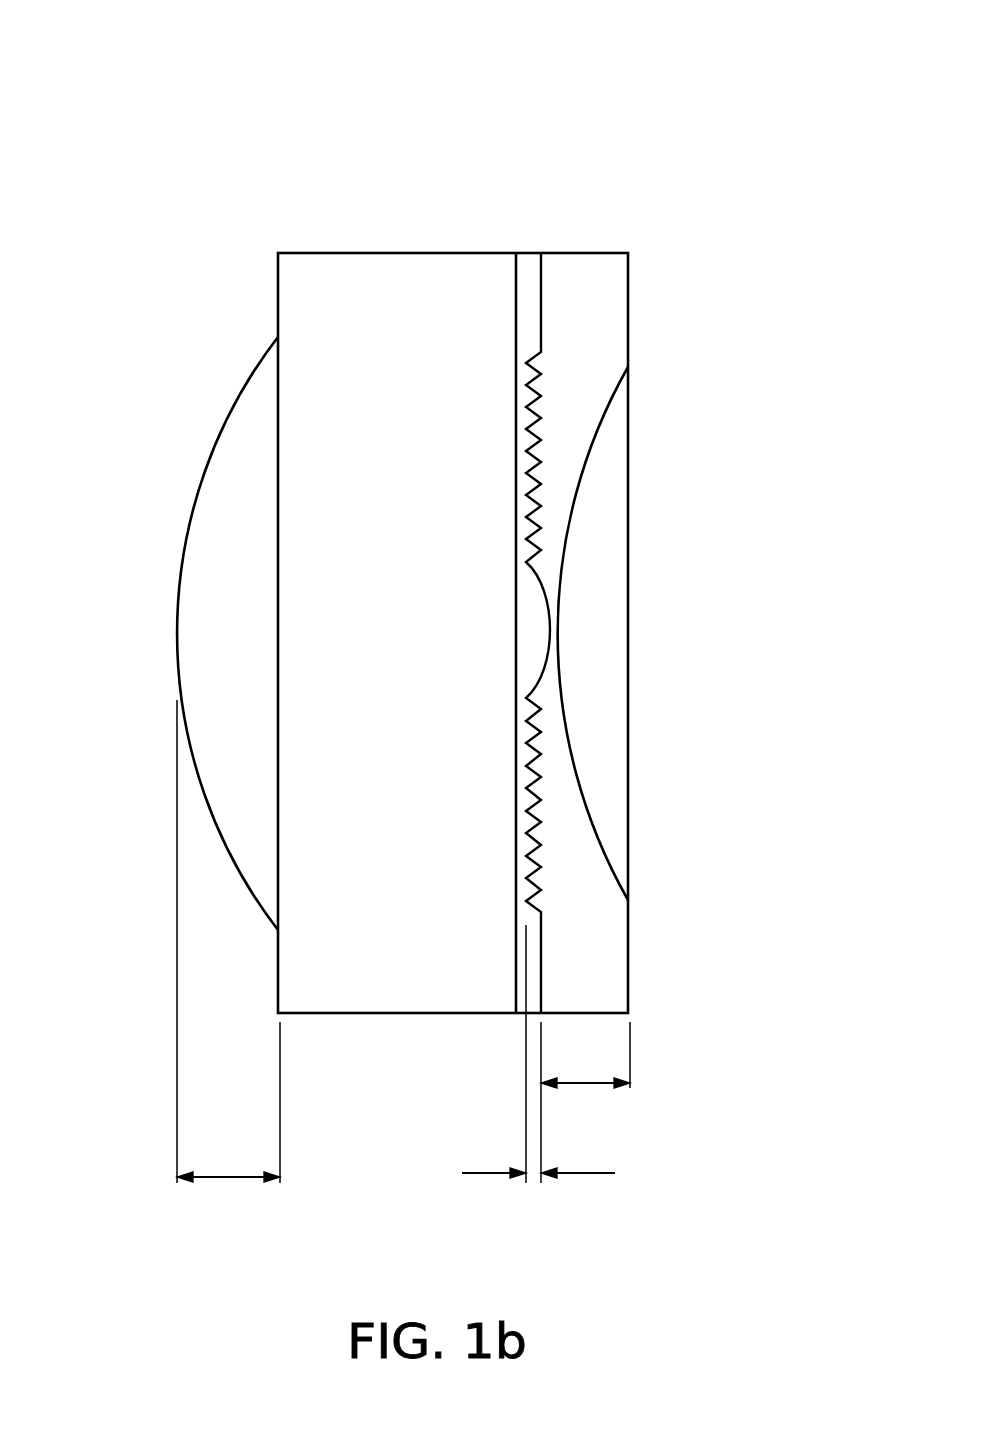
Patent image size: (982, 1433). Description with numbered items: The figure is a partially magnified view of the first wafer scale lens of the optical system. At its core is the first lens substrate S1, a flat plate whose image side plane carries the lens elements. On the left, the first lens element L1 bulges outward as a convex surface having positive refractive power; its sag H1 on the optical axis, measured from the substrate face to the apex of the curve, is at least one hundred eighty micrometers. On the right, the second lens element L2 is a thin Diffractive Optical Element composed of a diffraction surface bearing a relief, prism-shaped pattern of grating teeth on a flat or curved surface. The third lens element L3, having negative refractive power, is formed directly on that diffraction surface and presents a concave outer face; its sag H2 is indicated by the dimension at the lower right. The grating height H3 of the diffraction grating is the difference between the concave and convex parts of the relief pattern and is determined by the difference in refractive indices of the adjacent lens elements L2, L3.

The first lens substrate S1 is at (365, 292).
The first lens element L1 is at (240, 438).
The second lens element L2 is at (527, 263).
The third lens element L3 is at (602, 318).
The sag of the first lens element H1 is at (228, 941).
The sag of the second lens element H2 is at (585, 1102).
The grating height H3 is at (530, 1054).